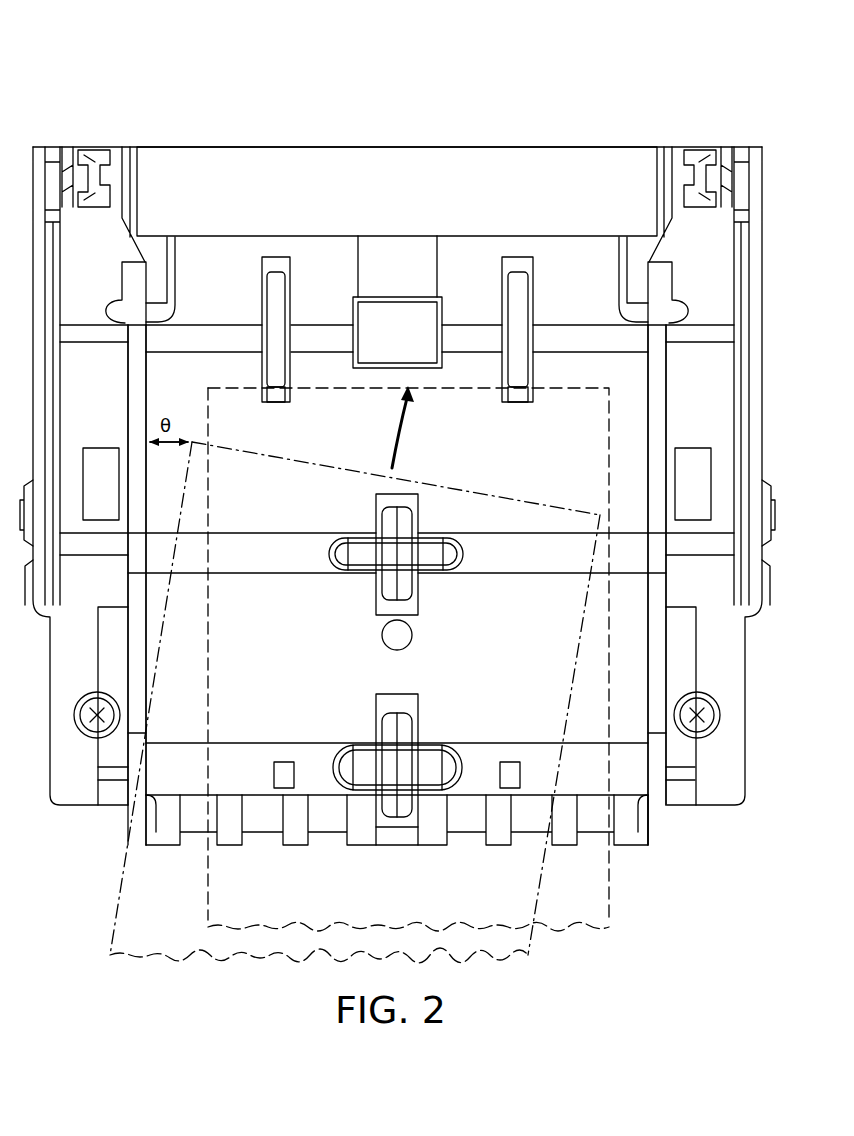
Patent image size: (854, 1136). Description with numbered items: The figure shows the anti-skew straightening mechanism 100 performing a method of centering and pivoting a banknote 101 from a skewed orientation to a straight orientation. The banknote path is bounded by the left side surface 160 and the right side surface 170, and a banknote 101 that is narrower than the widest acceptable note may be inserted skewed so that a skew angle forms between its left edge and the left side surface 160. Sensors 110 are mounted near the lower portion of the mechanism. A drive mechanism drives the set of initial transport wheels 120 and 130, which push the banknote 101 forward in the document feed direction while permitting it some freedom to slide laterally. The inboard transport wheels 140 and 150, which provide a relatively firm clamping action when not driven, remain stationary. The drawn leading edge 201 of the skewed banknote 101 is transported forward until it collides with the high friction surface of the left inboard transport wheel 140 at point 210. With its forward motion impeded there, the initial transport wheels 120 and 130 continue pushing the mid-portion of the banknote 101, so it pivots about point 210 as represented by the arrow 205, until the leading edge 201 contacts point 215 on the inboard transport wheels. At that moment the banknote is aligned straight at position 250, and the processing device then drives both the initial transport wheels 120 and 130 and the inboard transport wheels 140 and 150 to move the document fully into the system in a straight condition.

The anti-skew straightening mechanism 100 is at (170, 76).
The banknote 101 is at (115, 902).
The sensors 110 is at (287, 772).
The initial transport wheel 120 is at (405, 730).
The initial transport wheel 130 is at (405, 587).
The left inboard transport wheel 140 is at (275, 283).
The right inboard transport wheel 150 is at (518, 282).
The left side surface 160 is at (156, 394).
The right side surface 170 is at (640, 398).
The leading edge 201 is at (541, 500).
The arrow 205 is at (400, 428).
The point 210 is at (278, 392).
The point 215 is at (518, 392).
The position 250 is at (616, 884).